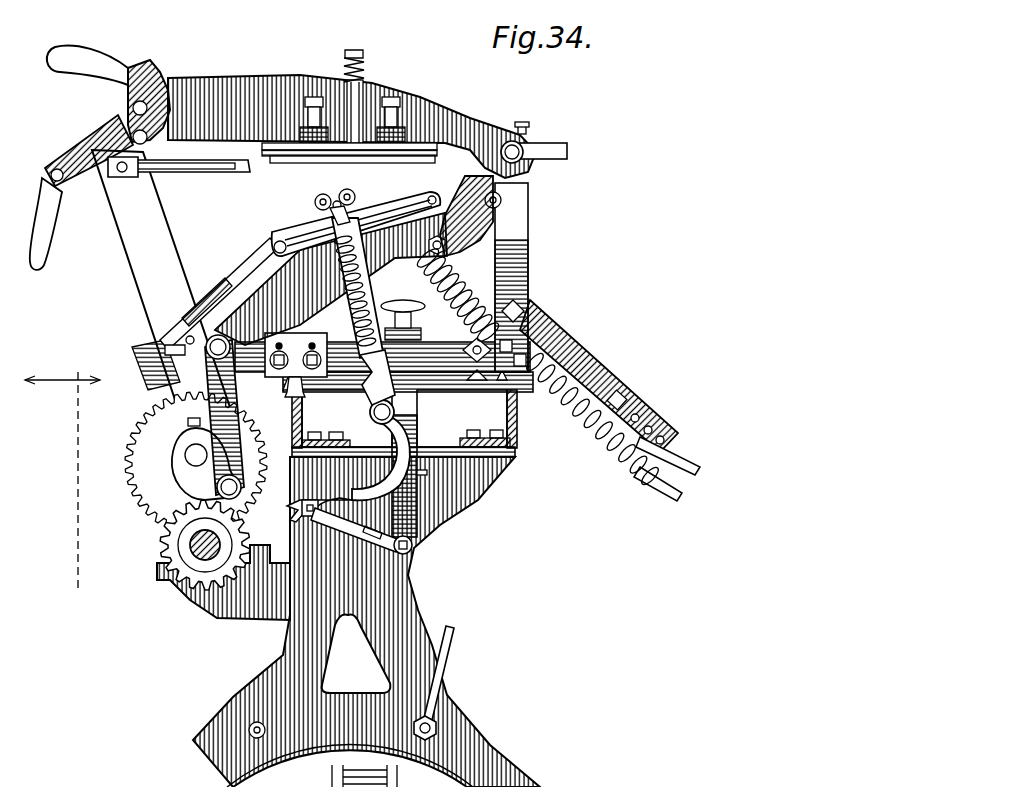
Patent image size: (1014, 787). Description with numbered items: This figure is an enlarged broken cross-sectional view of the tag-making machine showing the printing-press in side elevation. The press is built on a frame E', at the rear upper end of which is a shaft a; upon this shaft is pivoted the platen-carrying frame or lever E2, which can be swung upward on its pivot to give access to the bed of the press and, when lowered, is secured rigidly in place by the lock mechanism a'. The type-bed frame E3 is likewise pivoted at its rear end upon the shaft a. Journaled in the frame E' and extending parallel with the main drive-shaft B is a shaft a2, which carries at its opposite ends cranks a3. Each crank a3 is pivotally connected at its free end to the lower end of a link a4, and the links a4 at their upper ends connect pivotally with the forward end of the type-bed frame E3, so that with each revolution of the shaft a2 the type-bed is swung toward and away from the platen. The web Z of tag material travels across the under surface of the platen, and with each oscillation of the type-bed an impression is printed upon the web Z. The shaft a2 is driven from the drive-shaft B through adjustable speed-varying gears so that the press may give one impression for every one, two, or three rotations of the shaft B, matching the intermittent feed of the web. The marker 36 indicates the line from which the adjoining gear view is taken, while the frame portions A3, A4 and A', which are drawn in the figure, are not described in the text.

The platen-carrying frame or lever E2 is at (257, 100).
The lock mechanism a' is at (100, 158).
The frame E' is at (347, 297).
The web Z is at (290, 168).
The shaft a is at (539, 140).
The type-bed frame E3 is at (470, 228).
The direction arrow 36 is at (62, 472).
The link a4 is at (226, 412).
The block A4 is at (296, 396).
The shaft a2 is at (186, 456).
The crank a3 is at (185, 495).
The main drive-shaft B is at (195, 545).
The upper frame A3 is at (512, 428).
The main frame A' is at (348, 622).